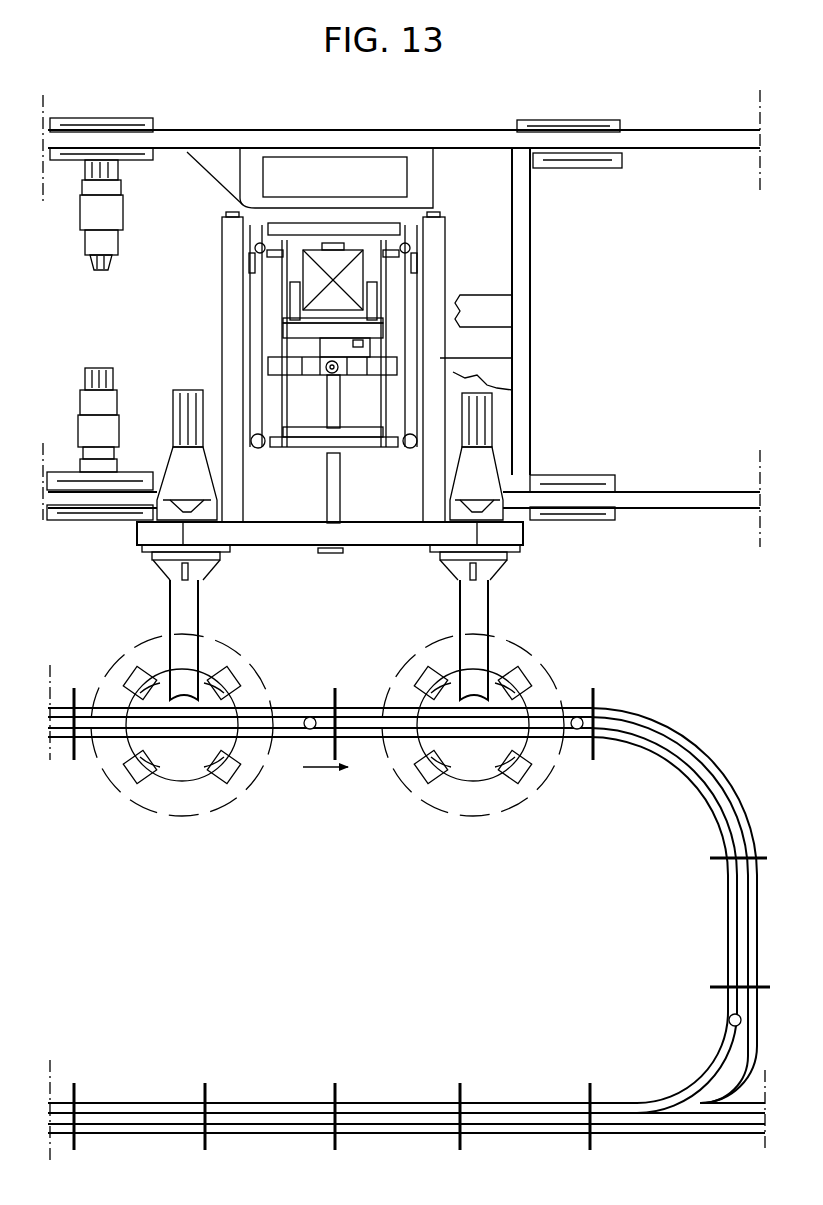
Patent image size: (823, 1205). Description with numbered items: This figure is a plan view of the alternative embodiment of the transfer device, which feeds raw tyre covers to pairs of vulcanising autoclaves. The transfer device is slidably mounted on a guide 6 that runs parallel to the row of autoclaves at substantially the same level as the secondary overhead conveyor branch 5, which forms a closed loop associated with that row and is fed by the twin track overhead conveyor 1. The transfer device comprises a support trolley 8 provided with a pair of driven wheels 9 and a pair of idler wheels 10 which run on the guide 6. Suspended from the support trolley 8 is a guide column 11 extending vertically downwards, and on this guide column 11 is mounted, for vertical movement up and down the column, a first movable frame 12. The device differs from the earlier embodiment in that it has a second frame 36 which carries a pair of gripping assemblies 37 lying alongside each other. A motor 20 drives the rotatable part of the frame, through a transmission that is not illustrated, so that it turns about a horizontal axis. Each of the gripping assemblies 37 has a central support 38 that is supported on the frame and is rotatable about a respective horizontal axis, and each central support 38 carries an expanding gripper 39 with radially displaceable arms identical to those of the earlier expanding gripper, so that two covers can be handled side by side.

The overhead conveyor 1 is at (730, 1098).
The secondary overhead conveyor branch 5 is at (704, 802).
The guide 6 is at (245, 120).
The support trolley 8 is at (603, 116).
The driven wheels 9 is at (122, 107).
The idler wheels 10 is at (592, 476).
The guide column 11 is at (345, 255).
The first movable frame 12 is at (396, 325).
The motor 20 is at (180, 416).
The second frame 36 is at (514, 360).
The gripping assemblies 37 is at (327, 736).
The central support 38 is at (178, 764).
The expanding gripper 39 is at (156, 786).